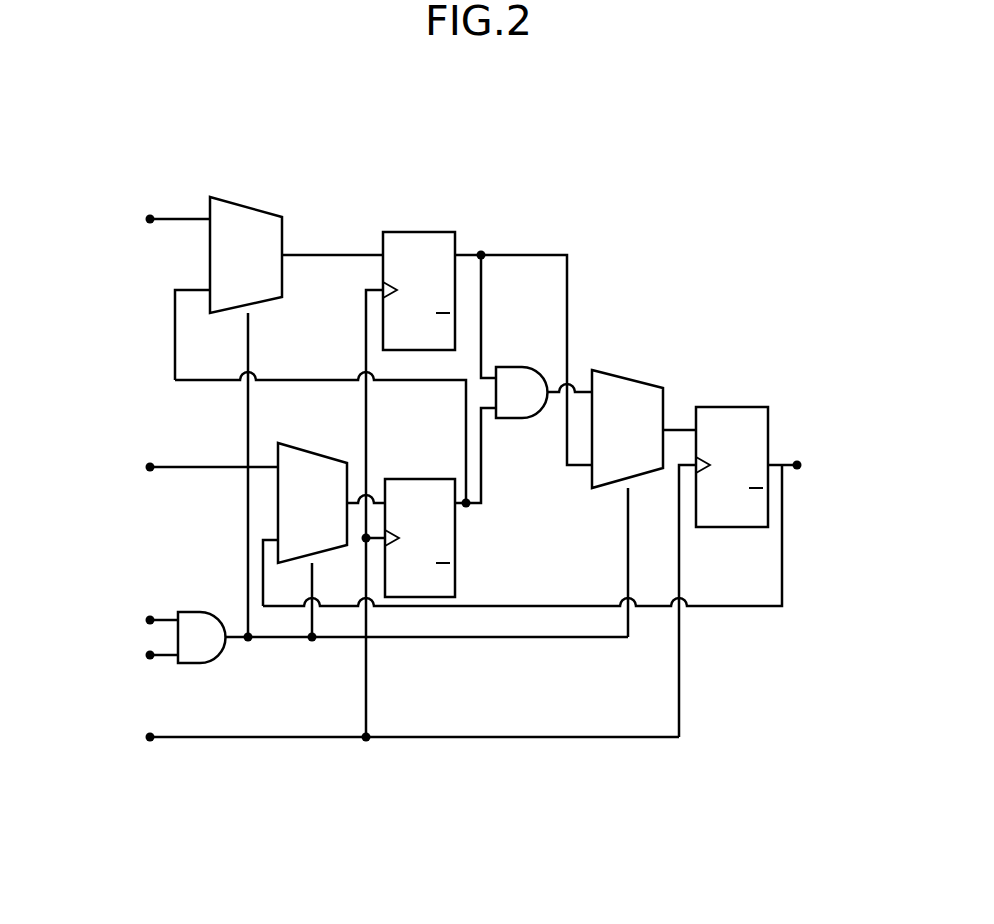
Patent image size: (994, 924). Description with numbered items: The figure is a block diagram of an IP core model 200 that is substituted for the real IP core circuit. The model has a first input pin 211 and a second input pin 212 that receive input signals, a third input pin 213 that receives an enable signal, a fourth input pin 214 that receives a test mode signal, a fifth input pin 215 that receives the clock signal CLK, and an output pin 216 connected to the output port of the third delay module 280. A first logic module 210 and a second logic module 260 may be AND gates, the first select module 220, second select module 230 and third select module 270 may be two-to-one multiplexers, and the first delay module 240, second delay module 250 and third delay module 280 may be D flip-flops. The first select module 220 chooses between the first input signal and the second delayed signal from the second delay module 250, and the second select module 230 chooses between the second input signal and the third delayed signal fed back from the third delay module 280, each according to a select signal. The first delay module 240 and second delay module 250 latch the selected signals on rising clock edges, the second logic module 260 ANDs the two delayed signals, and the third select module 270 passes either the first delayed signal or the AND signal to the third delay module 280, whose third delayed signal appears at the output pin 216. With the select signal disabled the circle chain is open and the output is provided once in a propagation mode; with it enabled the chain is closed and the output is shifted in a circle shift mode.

The IP core model 200 is at (458, 123).
The first logic module 210 is at (205, 611).
The first input pin 211 is at (150, 206).
The second input pin 212 is at (150, 456).
The third input pin 213 is at (150, 609).
The fourth input pin 214 is at (150, 664).
The fifth input pin 215 is at (150, 745).
The output pin 216 is at (797, 456).
The first select module 220 is at (249, 197).
The second select module 230 is at (322, 443).
The first delay module 240 is at (421, 232).
The second delay module 250 is at (422, 479).
The second logic module 260 is at (520, 367).
The third select module 270 is at (630, 370).
The third delay module 280 is at (733, 407).